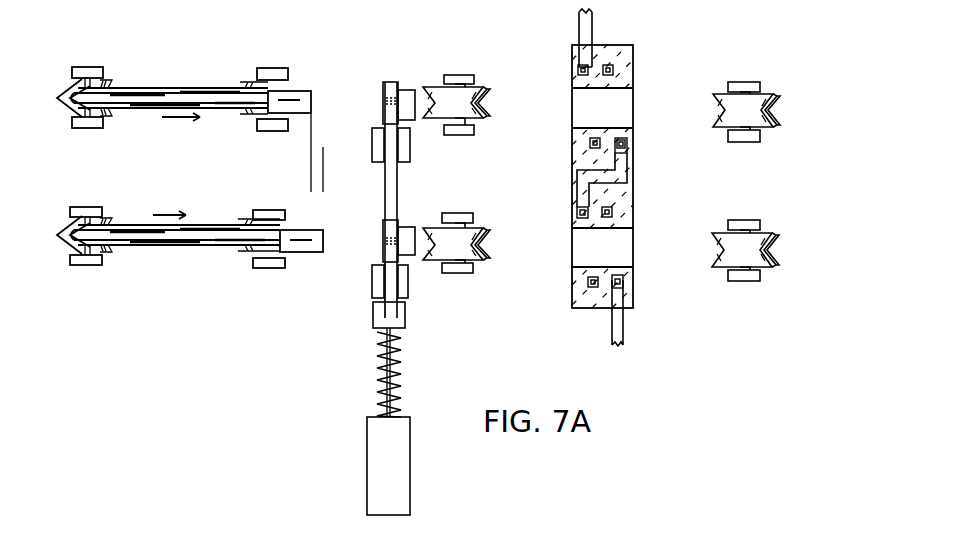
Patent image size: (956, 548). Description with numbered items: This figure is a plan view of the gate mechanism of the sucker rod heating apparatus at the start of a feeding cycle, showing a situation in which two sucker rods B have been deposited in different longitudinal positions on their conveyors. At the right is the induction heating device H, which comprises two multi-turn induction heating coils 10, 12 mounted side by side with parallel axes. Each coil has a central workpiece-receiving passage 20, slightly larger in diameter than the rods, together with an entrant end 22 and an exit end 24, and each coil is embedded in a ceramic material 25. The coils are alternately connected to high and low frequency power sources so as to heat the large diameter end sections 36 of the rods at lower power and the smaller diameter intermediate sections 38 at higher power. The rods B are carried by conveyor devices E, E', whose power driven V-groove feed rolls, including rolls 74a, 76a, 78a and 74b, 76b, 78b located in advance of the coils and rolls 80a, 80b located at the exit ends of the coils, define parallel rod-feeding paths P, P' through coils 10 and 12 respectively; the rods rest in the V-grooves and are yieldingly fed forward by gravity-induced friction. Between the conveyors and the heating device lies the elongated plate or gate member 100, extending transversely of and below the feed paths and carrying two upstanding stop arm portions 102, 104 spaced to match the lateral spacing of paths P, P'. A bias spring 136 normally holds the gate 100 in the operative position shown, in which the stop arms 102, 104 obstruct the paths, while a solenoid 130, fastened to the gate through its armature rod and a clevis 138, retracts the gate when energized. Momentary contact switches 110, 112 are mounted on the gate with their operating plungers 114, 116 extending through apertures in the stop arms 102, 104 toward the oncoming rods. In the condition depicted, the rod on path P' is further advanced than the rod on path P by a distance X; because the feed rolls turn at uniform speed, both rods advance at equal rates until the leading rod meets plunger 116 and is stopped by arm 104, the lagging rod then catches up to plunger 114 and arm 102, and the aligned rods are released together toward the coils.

The induction heating coil 10 is at (617, 60).
The induction heating coil 12 is at (596, 308).
The workpiece-receiving passage 20 is at (586, 100).
The entrant end 22 is at (572, 113).
The exit end 24 is at (633, 112).
The ceramic material 25 is at (630, 78).
The large diameter end section 36 is at (275, 113).
The smaller diameter intermediate section 38 is at (130, 108).
The V-groove feed roll 74a is at (108, 85).
The V-groove feed roll 74b is at (106, 250).
The V-groove feed roll 76a is at (297, 86).
The V-groove feed roll 76b is at (252, 262).
The V-groove feed roll 78a is at (480, 92).
The V-groove feed roll 78b is at (487, 250).
The V-groove feed roll 80a is at (774, 102).
The V-groove feed roll 80b is at (775, 258).
The plate or gate member 100 is at (398, 182).
The stop arm portion 102 is at (388, 82).
The stop arm portion 104 is at (398, 257).
The momentary contact switch 110 is at (408, 112).
The momentary contact switch 112 is at (405, 235).
The operating plunger 114 is at (384, 103).
The operating plunger 116 is at (384, 242).
The solenoid 130 is at (367, 460).
The bias spring 136 is at (378, 366).
The clevis 138 is at (398, 322).
The sucker rod B is at (182, 80).
The conveyor device E is at (453, 42).
The conveyor device E' is at (468, 304).
The induction heating device H is at (560, 35).
The rod-feeding path P is at (336, 89).
The rod-feeding path P' is at (345, 253).
The distance X is at (332, 176).